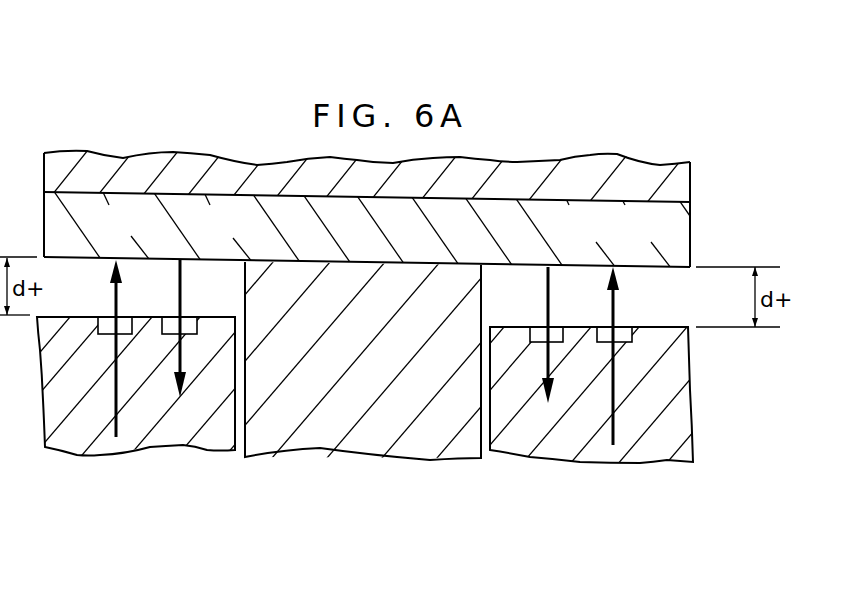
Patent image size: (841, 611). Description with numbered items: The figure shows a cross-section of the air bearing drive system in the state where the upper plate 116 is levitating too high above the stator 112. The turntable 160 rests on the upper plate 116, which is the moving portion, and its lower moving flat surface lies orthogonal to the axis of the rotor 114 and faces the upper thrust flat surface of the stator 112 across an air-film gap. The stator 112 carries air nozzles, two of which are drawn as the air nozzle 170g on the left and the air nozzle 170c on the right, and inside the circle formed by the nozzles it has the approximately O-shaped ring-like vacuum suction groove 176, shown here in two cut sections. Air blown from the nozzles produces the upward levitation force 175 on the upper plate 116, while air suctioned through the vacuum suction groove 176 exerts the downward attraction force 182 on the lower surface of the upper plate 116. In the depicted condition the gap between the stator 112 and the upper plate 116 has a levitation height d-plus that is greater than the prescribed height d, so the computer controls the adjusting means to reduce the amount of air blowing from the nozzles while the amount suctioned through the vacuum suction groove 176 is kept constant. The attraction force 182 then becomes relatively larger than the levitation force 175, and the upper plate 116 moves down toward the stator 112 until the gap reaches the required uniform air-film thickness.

The turntable 160 is at (667, 182).
The upper plate 116 is at (683, 246).
The stator 112 is at (80, 432).
The rotor 114 is at (315, 437).
The air nozzle 170g is at (126, 316).
The air nozzle 170c is at (625, 325).
The vacuum suction groove 176 is at (188, 318).
The levitation force 175 is at (117, 377).
The attraction force 182 is at (186, 357).